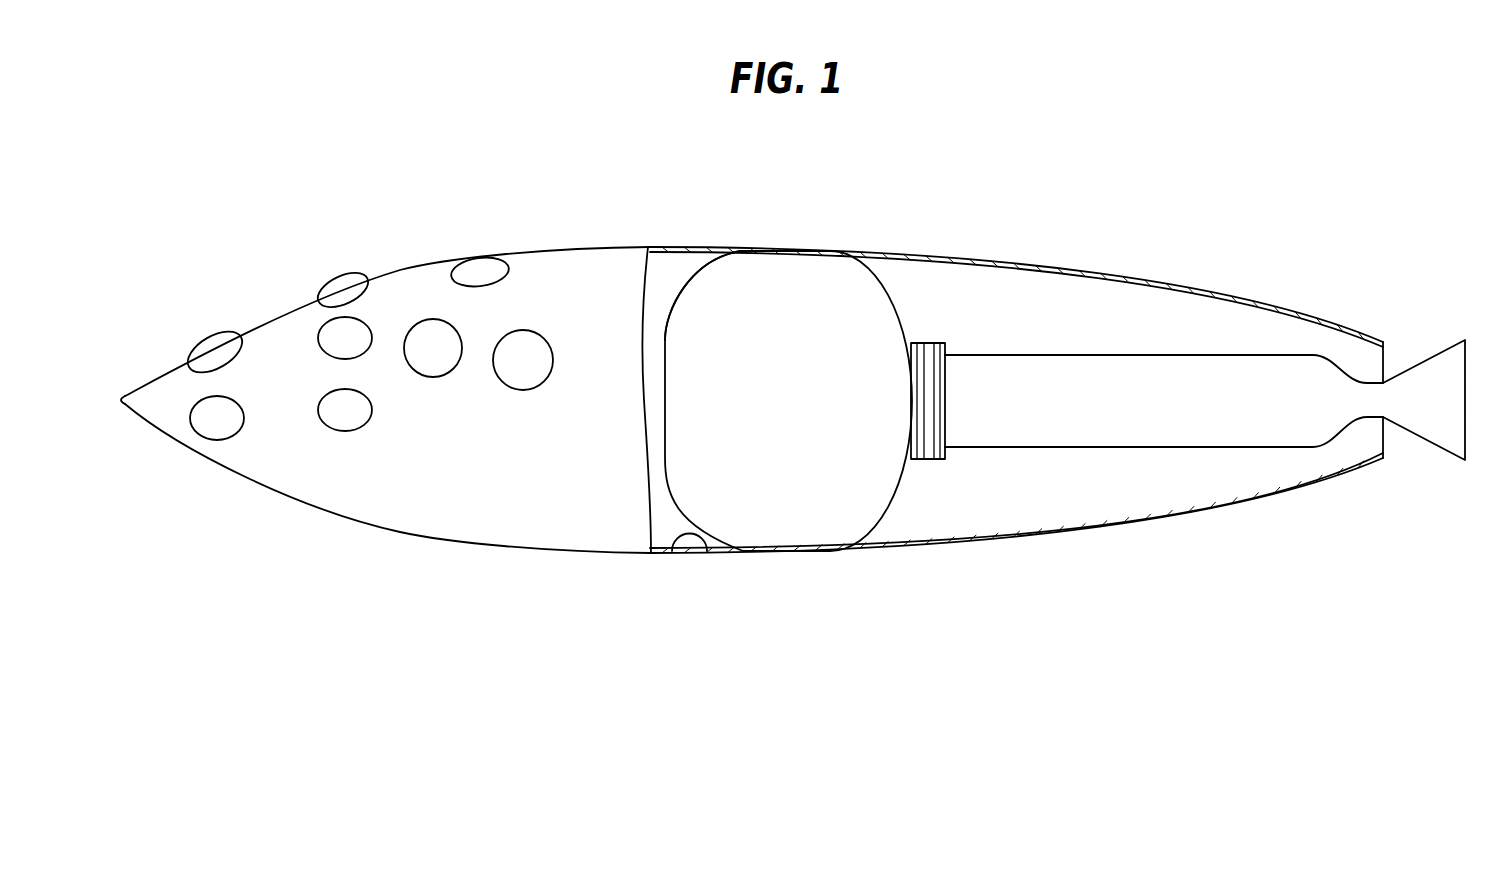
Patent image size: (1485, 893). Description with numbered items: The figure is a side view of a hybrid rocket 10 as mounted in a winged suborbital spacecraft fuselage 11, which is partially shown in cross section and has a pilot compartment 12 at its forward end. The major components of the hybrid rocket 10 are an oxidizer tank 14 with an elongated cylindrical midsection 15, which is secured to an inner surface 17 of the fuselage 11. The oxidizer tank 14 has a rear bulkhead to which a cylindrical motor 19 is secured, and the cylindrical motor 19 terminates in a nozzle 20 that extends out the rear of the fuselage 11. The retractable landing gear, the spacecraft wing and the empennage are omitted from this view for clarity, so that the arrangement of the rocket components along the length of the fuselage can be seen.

The hybrid rocket 10 is at (967, 345).
The winged suborbital spacecraft fuselage 11 is at (874, 228).
The pilot compartment 12 is at (287, 327).
The oxidizer tank 14 is at (691, 276).
The elongated cylindrical midsection 15 is at (805, 252).
The inner surface 17 is at (676, 538).
The cylindrical motor 19 is at (1112, 448).
The nozzle 20 is at (1433, 448).